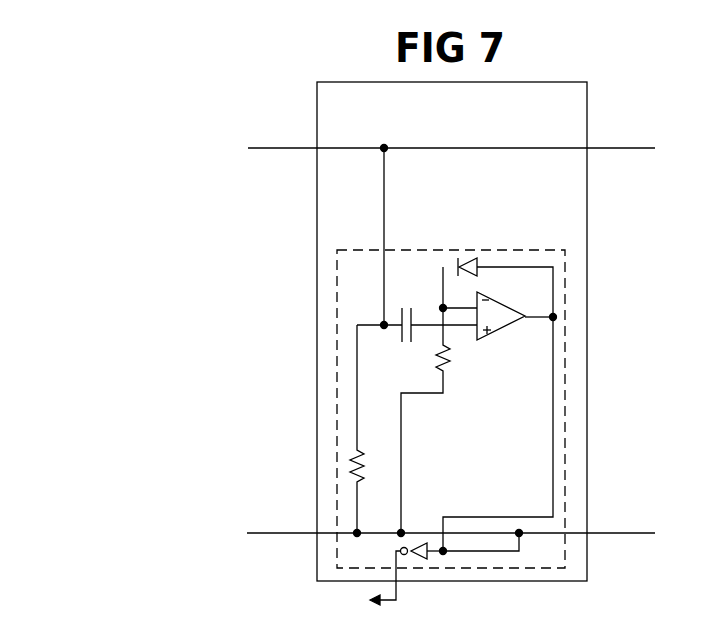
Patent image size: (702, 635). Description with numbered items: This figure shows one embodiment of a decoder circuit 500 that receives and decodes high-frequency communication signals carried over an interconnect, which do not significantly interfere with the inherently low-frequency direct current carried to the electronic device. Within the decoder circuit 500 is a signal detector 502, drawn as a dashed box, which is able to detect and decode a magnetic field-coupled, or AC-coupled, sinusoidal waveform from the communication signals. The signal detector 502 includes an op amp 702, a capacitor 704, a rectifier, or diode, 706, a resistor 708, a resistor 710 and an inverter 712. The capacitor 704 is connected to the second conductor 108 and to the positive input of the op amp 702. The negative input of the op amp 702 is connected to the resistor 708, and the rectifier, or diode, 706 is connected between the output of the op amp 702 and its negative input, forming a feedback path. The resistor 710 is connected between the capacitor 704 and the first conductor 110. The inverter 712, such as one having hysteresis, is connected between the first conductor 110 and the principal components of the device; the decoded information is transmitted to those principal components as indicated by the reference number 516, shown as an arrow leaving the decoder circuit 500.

The decoder circuit 500 is at (602, 40).
The signal detector 502 is at (354, 250).
The second conductor 108 is at (282, 147).
The first conductor 110 is at (286, 533).
The op amp 702 is at (490, 339).
The capacitor 704 is at (404, 312).
The rectifier, or diode 706 is at (480, 263).
The resistor 708 is at (443, 366).
The resistor 710 is at (372, 466).
The inverter 712 is at (415, 560).
The output to principal components 516 is at (120, 580).